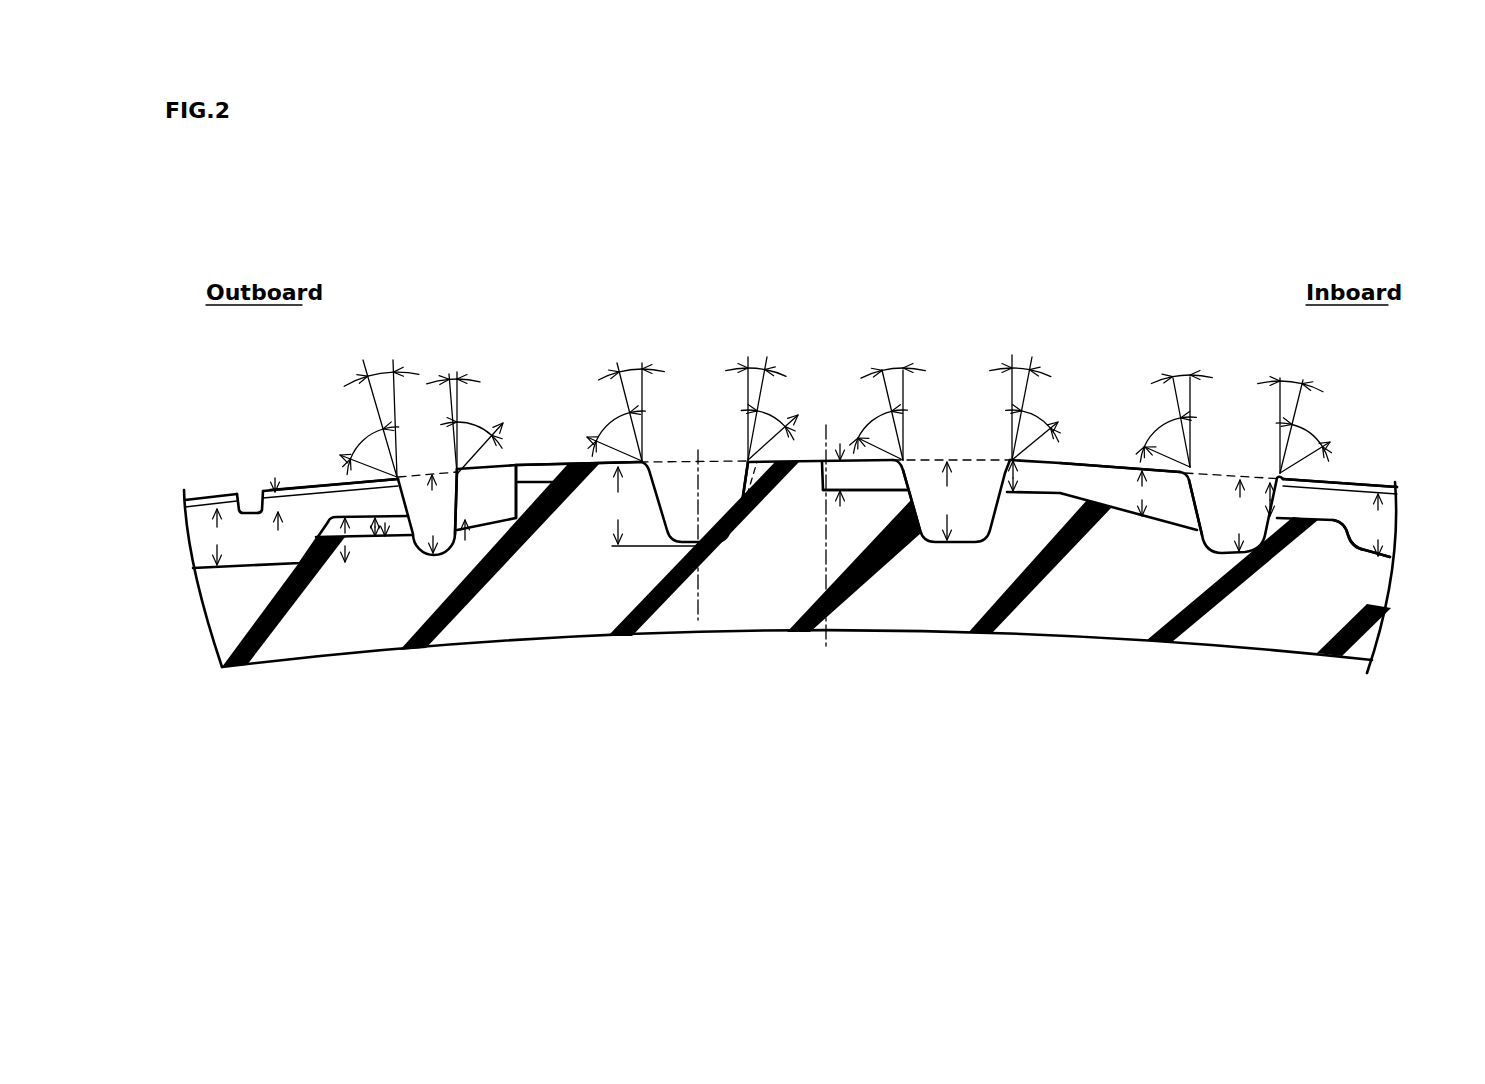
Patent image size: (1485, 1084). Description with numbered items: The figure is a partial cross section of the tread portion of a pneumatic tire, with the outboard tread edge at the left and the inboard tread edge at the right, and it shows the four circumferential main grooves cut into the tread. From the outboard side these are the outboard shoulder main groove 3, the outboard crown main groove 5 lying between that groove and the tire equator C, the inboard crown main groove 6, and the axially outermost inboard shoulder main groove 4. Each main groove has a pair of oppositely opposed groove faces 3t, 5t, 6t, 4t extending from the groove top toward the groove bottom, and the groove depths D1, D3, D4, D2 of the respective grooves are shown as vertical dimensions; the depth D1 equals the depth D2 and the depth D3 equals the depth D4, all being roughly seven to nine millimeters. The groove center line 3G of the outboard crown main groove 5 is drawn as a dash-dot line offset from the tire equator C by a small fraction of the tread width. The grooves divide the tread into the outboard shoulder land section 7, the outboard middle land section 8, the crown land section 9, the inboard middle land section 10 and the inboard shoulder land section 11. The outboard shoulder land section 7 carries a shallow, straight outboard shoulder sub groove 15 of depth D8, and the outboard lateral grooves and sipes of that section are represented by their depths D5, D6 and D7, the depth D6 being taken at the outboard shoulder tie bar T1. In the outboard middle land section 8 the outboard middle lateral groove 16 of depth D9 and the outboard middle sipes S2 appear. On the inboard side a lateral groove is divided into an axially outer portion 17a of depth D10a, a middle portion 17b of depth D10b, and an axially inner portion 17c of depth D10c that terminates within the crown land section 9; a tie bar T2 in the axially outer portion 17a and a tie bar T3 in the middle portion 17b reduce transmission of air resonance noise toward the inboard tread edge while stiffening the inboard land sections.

The outboard shoulder sub groove 15 is at (245, 492).
The outboard shoulder land section 7 is at (308, 484).
The outboard shoulder main groove 3 is at (399, 476).
The groove face of outboard shoulder main groove 3t is at (452, 502).
The outboard middle lateral groove 16 is at (513, 470).
The outboard middle sipe S2 is at (545, 480).
The outboard middle land section 8 is at (559, 462).
The outboard crown main groove 5 is at (681, 518).
The groove face of outboard crown main groove 5t is at (741, 496).
The crown land section 9 is at (852, 456).
The tire equator C is at (826, 523).
The inboard crown main groove 6 is at (974, 495).
The groove face of inboard crown main groove 6t is at (919, 498).
The tie bar T2 is at (1011, 477).
The middle portion 17b is at (1093, 488).
The inboard middle land section 10 is at (1133, 460).
The inboard shoulder main groove 4 is at (1232, 478).
The groove face of inboard shoulder main groove 4t is at (1223, 488).
The tie bar T3 is at (1268, 482).
The inboard shoulder land section 11 is at (1350, 478).
The axially outer portion 17a is at (1376, 545).
The axially inner portion 17c is at (878, 478).
The groove center line 3G is at (700, 590).
The groove depth of outboard shoulder main groove D1 is at (432, 514).
The groove depth of inboard shoulder main groove D2 is at (1242, 515).
The groove depth of outboard crown main groove D3 is at (655, 506).
The groove depth of inboard crown main groove D4 is at (945, 501).
The groove depth of outboard shoulder lateral groove D5 is at (218, 568).
The groove depth at outboard shoulder tie bar D6 is at (345, 564).
The depth of outboard shoulder sipe D7 is at (386, 540).
The groove depth of outboard shoulder sub groove D8 is at (279, 532).
The groove depth of outboard middle lateral groove D9 is at (465, 542).
The groove depth of axially outer portion D10a is at (1376, 558).
The groove depth of middle portion D10b is at (1170, 523).
The groove depth of axially inner portion D10c is at (840, 508).
The outboard shoulder tie bar T1 is at (375, 538).